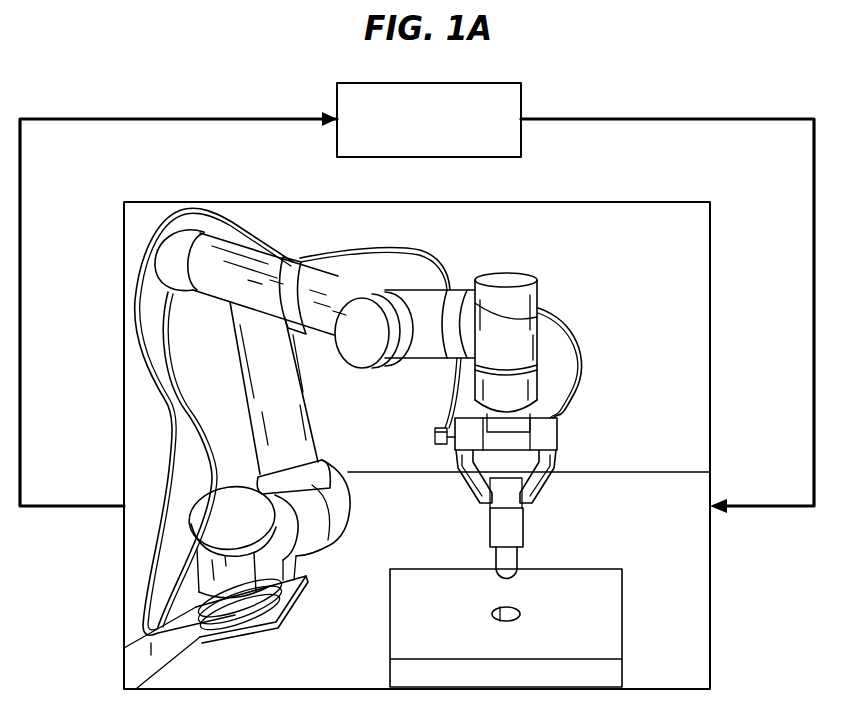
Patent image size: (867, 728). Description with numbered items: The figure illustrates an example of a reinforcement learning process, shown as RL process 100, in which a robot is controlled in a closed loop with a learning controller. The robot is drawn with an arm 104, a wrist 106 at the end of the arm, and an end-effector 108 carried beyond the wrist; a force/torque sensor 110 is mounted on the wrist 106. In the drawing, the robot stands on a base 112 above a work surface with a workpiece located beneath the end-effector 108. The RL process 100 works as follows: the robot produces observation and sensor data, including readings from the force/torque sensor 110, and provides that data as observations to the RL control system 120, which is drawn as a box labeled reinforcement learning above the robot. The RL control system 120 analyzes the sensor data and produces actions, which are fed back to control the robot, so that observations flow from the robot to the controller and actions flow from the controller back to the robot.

The RL process 100 is at (166, 70).
The RL control system 120 is at (522, 95).
The arm 104 is at (249, 282).
The wrist 106 is at (548, 418).
The end-effector 108 is at (530, 537).
The force/torque sensor 110 is at (430, 437).
The robot base 112 is at (250, 565).